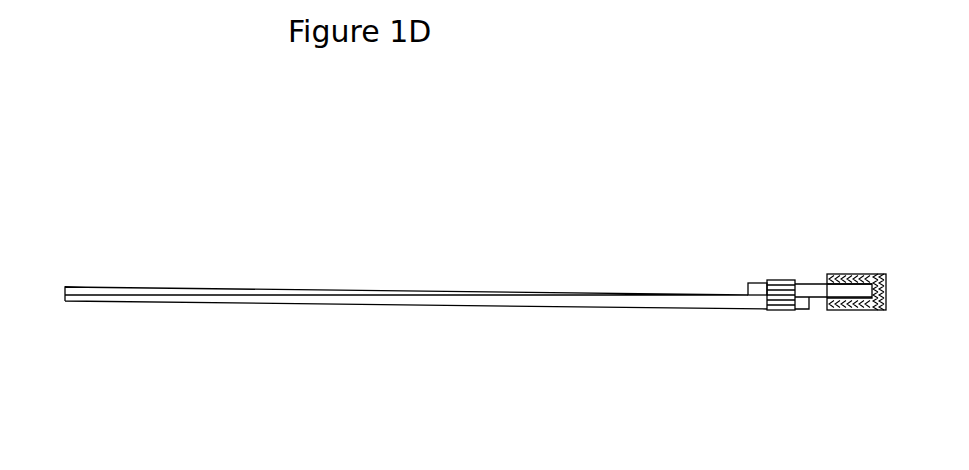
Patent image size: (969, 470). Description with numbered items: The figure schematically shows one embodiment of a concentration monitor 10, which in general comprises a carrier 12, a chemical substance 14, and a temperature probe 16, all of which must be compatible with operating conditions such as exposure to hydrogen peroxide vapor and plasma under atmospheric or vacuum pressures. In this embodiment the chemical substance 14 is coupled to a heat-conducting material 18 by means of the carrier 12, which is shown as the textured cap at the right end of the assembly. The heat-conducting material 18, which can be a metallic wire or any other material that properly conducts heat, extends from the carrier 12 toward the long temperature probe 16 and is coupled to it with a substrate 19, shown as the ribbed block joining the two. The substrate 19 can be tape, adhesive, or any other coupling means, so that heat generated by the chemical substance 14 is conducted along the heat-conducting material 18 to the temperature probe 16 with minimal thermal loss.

The concentration monitor 10 is at (400, 231).
The carrier 12 is at (812, 313).
The chemical substance 14 is at (835, 270).
The temperature probe 16 is at (218, 312).
The heat-conducting material 18 is at (752, 278).
The substrate 19 is at (770, 314).